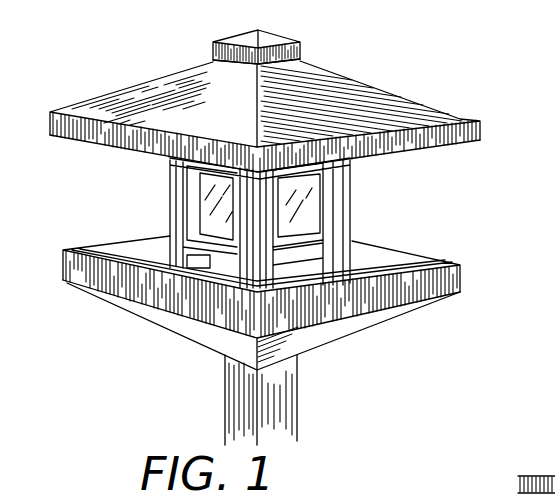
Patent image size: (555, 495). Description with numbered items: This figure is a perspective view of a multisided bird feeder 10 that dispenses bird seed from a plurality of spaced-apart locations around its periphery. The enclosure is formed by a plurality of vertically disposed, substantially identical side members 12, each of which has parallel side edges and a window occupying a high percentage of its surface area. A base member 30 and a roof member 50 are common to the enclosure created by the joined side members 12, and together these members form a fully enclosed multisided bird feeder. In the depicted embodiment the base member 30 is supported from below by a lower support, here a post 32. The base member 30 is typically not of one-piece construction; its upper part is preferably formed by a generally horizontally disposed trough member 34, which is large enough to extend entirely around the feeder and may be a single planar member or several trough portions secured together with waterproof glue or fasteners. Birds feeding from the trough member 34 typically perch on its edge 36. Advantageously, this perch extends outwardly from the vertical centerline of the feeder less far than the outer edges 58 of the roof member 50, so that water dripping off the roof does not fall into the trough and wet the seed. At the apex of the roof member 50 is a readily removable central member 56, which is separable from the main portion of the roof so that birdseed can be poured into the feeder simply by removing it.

The multisided bird feeder 10 is at (452, 92).
The side member 12 is at (177, 193).
The base member 30 is at (183, 327).
The post 32 is at (287, 398).
The trough member 34 is at (395, 263).
The edge 36 is at (432, 288).
The roof member 50 is at (353, 97).
The central member 56 is at (297, 50).
The outer edge 58 is at (452, 137).